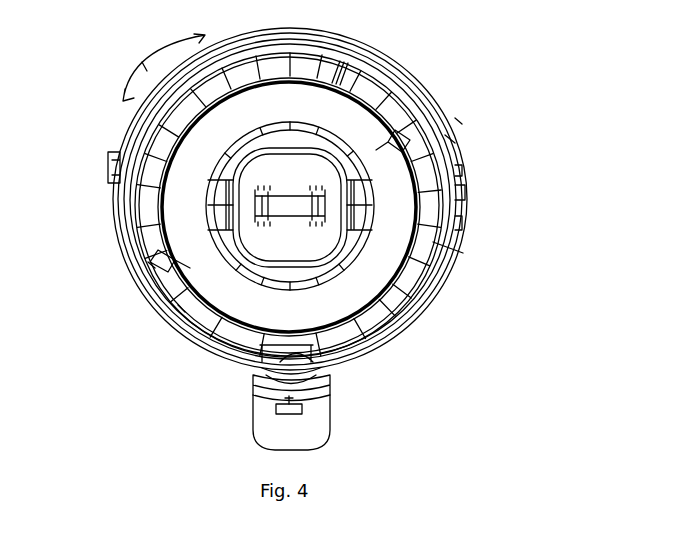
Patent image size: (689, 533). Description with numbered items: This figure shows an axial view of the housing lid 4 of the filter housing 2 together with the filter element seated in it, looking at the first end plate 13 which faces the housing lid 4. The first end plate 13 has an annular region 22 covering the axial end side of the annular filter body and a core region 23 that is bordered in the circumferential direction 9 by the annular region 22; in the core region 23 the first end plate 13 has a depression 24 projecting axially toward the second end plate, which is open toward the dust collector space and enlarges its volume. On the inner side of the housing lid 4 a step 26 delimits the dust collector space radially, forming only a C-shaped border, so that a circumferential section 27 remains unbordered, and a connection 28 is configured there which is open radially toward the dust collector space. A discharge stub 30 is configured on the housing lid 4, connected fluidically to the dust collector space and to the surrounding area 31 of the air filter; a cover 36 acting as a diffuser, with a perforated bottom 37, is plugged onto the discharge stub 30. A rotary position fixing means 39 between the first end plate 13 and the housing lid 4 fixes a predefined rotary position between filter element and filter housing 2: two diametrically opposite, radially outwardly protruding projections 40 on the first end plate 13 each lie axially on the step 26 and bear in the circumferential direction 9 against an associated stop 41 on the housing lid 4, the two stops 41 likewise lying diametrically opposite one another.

The filter housing 2 is at (480, 207).
The housing lid 4 is at (441, 121).
The circumferential direction 9 is at (163, 67).
The first end plate 13 is at (419, 198).
The annular region 22 is at (385, 320).
The core region 23 is at (350, 170).
The depression 24 is at (280, 160).
The step 26 is at (455, 250).
The circumferential section 27 is at (346, 70).
The connection 28 is at (272, 68).
The discharge stub 30 is at (350, 409).
The surrounding area 31 is at (176, 400).
The cover 36 is at (71, 13).
The perforated bottom 37 is at (17, 18).
The rotary position fixing means 39 is at (181, 254).
The projection 40 is at (410, 117).
The stop 41 is at (455, 140).